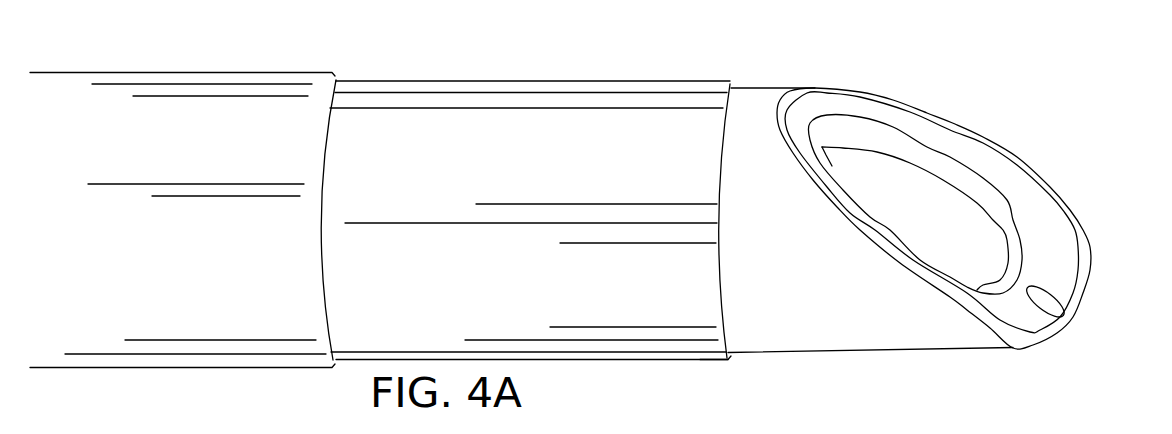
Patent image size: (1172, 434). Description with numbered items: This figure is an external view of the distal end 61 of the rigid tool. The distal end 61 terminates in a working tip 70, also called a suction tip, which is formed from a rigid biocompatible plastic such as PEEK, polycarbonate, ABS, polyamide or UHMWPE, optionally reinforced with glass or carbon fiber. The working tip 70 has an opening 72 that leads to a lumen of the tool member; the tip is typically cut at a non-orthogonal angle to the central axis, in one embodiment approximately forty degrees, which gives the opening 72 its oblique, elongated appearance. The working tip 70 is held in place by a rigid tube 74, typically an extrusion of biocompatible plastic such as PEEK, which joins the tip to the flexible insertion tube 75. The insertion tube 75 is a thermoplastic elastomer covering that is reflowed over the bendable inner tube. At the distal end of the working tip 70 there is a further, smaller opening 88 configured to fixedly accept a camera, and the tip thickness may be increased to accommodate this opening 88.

The distal end 61 is at (698, 368).
The working tip 70 is at (760, 88).
The opening 72 is at (980, 255).
The rigid tube 74 is at (585, 82).
The flexible insertion tube 75 is at (67, 79).
The opening 88 is at (1060, 310).